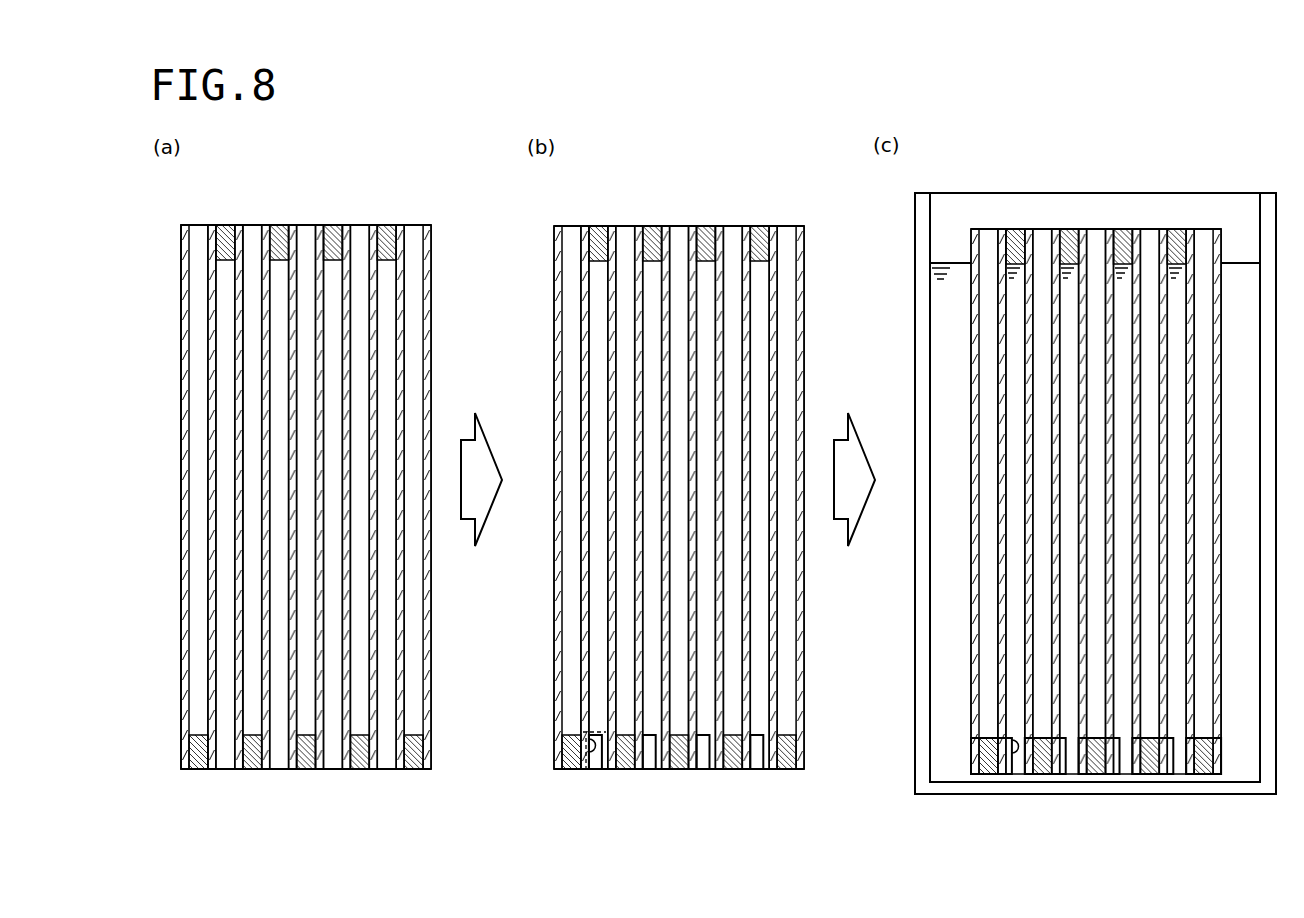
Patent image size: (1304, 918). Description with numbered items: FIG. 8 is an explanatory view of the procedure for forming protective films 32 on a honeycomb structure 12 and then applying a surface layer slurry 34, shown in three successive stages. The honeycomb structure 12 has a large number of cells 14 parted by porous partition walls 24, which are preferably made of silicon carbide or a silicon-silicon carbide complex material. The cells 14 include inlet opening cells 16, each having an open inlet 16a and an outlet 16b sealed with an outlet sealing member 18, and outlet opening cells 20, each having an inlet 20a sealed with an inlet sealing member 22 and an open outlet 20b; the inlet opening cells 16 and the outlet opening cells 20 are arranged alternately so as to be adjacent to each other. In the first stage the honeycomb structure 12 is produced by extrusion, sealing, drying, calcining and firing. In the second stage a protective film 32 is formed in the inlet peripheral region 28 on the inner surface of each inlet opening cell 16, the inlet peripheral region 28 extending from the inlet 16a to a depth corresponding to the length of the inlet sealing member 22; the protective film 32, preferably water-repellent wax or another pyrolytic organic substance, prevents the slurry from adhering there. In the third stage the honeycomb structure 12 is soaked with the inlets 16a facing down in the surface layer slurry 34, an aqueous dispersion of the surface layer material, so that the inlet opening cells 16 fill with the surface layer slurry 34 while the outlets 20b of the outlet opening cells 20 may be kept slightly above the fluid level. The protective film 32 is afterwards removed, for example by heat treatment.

The honeycomb structure 12 is at (420, 214).
The cells 14 is at (135, 580).
The inlet opening cells 16 is at (227, 610).
The inlets 16a is at (228, 770).
The outlets 16b is at (225, 225).
The outlet sealing members 18 is at (228, 252).
The outlet opening cells 20 is at (197, 642).
The inlets 20a is at (200, 770).
The outlets 20b is at (198, 225).
The inlet sealing members 22 is at (190, 750).
The porous partition walls 24 is at (263, 543).
The inlet peripheral region 28 is at (635, 770).
The protective film 32 is at (585, 738).
The surface layer slurry 34 is at (956, 321).